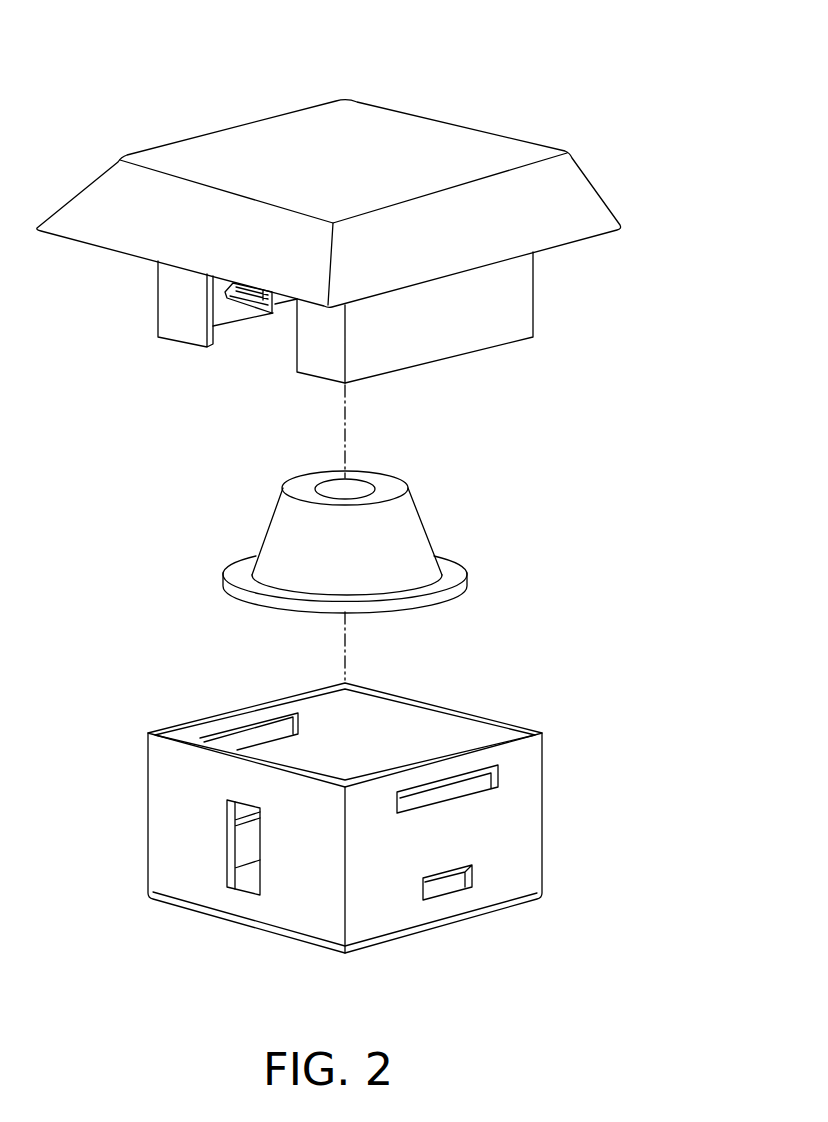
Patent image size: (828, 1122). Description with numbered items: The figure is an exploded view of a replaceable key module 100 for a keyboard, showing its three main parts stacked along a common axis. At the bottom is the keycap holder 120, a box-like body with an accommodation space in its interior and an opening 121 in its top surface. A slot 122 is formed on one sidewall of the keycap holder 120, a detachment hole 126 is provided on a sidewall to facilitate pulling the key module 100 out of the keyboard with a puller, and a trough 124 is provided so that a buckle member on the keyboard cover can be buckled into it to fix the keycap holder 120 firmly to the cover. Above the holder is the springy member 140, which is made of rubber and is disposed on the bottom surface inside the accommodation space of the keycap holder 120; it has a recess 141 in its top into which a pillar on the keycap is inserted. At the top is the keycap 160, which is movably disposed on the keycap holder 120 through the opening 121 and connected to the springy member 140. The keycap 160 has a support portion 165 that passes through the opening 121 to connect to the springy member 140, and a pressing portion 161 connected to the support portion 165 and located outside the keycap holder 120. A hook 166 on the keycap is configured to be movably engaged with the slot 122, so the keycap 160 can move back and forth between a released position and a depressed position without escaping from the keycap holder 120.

The replaceable key module 100 is at (688, 37).
The keycap holder 120 is at (523, 860).
The opening 121 is at (426, 712).
The slot 122 is at (242, 852).
The trough 124 is at (447, 886).
The detachment hole 126 is at (242, 737).
The springy member 140 is at (405, 518).
The recess 141 is at (376, 478).
The keycap 160 is at (653, 250).
The pressing portion 161 is at (553, 232).
The support portion 165 is at (518, 323).
The hook 166 is at (250, 307).